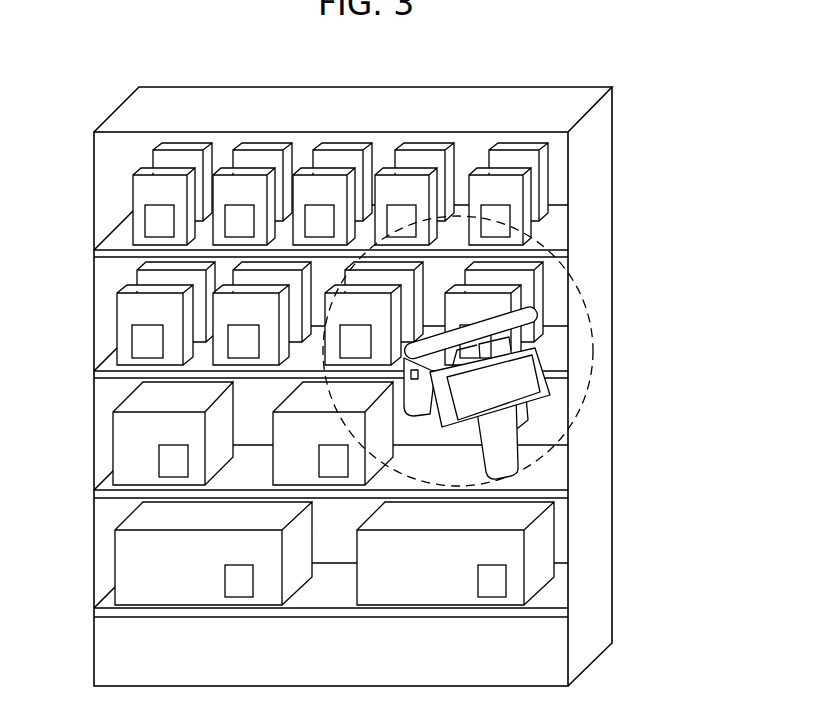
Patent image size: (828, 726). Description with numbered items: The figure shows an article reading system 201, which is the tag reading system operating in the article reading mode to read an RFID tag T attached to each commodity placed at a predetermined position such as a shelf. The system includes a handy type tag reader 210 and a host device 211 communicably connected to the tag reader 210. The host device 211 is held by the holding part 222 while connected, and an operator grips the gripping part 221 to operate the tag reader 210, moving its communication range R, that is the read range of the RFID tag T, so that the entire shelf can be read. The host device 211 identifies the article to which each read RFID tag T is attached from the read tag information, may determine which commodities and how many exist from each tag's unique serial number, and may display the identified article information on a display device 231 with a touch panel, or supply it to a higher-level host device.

The RFID tag T is at (491, 577).
The communication range R is at (556, 238).
The article reading system 201 is at (560, 378).
The tag reader 210 is at (530, 316).
The host device 211 is at (573, 384).
The display device 231 is at (522, 359).
The holding part 222 is at (522, 416).
The gripping part 221 is at (505, 454).